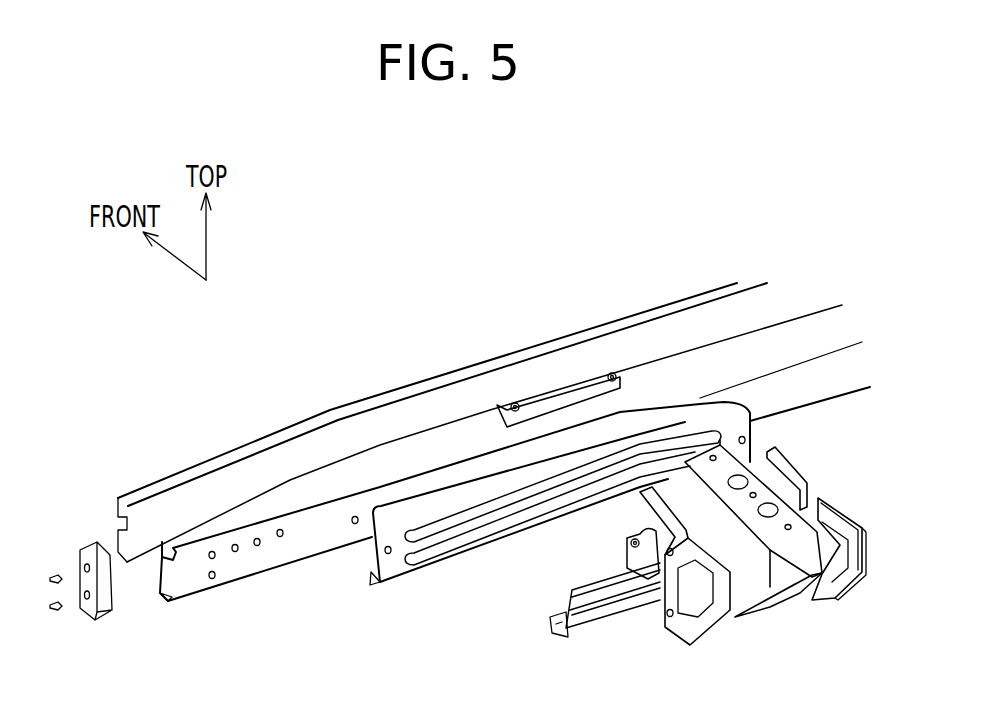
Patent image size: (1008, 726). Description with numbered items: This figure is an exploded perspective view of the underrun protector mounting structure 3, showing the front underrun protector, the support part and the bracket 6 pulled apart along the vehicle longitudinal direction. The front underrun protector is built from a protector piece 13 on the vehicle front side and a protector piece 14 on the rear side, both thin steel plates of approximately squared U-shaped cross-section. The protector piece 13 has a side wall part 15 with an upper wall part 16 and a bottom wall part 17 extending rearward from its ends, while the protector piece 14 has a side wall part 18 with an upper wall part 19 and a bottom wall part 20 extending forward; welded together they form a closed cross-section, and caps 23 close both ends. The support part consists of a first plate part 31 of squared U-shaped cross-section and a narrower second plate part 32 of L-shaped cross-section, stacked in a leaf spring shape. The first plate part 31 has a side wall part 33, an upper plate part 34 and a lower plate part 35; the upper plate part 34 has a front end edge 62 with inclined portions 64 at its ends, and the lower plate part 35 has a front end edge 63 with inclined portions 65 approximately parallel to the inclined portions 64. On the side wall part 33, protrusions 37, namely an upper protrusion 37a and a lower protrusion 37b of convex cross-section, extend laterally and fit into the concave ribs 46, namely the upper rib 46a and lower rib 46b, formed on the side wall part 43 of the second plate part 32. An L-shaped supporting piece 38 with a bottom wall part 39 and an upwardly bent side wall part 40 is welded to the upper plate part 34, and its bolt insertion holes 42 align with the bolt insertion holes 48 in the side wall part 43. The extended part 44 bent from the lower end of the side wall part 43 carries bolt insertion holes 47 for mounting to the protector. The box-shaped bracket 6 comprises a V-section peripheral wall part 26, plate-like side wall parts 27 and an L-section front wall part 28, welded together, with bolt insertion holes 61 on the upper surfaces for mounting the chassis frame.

The underrun protector mounting structure 3 is at (810, 286).
The bracket 6 is at (868, 548).
The protector piece 13 is at (185, 468).
The protector piece 14 is at (230, 583).
The side wall part 15 is at (118, 507).
The upper wall part 16 is at (148, 490).
The bottom wall part 17 is at (135, 550).
The side wall part 18 is at (193, 583).
The upper wall part 19 is at (268, 510).
The bottom wall part 20 is at (167, 602).
The cap 23 is at (107, 612).
The peripheral wall part 26 is at (797, 567).
The side wall part 27 is at (710, 618).
The front wall part 28 is at (712, 537).
The first plate part 31 is at (418, 576).
The second plate part 32 is at (563, 613).
The side wall part 33 is at (340, 500).
The upper plate part 34 is at (418, 502).
The lower plate part 35 is at (369, 569).
The protrusions 37 is at (584, 547).
The upper protrusion 37a is at (400, 560).
The lower protrusion 37b is at (412, 585).
The supporting piece 38 is at (560, 400).
The bottom wall part 39 is at (497, 405).
The side wall part 40 is at (540, 415).
The bolt insertion holes 42 is at (515, 405).
The side wall part 43 is at (603, 582).
The extended part 44 is at (560, 635).
The ribs 46 is at (527, 643).
The upper rib 46a is at (570, 605).
The lower rib 46b is at (577, 640).
The bolt insertion holes 47 is at (563, 623).
The bolt insertion holes 48 is at (632, 548).
The bolt insertion holes 61 is at (752, 448).
The front end edge 62 is at (652, 405).
The front end edge 63 is at (371, 572).
The inclined portions 64 is at (445, 473).
The inclined portions 65 is at (302, 474).